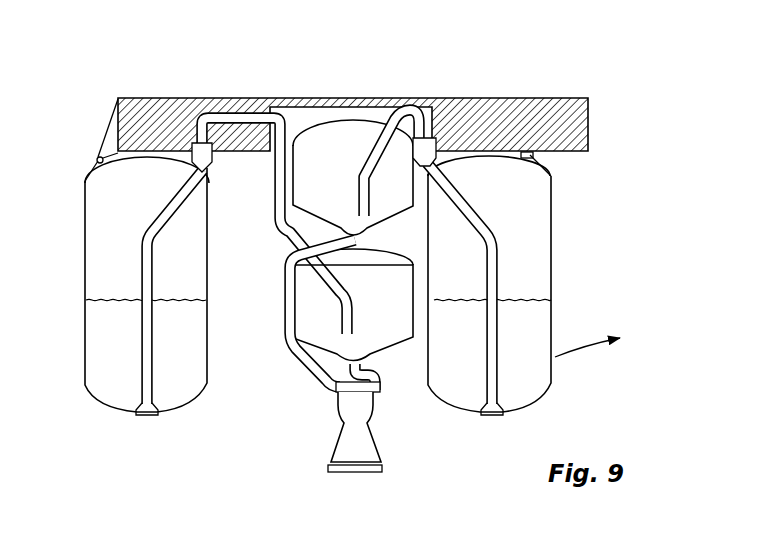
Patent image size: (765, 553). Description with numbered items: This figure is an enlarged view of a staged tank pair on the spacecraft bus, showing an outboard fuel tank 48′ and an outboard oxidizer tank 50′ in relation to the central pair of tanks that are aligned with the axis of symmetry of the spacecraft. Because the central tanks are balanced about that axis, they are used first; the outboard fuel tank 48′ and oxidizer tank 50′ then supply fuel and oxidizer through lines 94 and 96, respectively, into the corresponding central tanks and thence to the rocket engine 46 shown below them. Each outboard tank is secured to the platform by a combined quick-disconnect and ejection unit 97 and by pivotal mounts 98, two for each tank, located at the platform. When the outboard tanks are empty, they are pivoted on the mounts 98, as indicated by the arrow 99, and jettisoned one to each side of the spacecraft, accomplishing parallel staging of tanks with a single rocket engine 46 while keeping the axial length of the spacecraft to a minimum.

The rocket engine 46 is at (375, 442).
The fuel tank 48′ is at (85, 230).
The oxidizer tank 50′ is at (554, 239).
The fuel line 94 is at (234, 99).
The oxidizer line 96 is at (397, 107).
The combined quick-disconnect and ejection unit 97 is at (209, 171).
The pivotal mount 98 is at (88, 147).
The arrow 99 is at (578, 350).